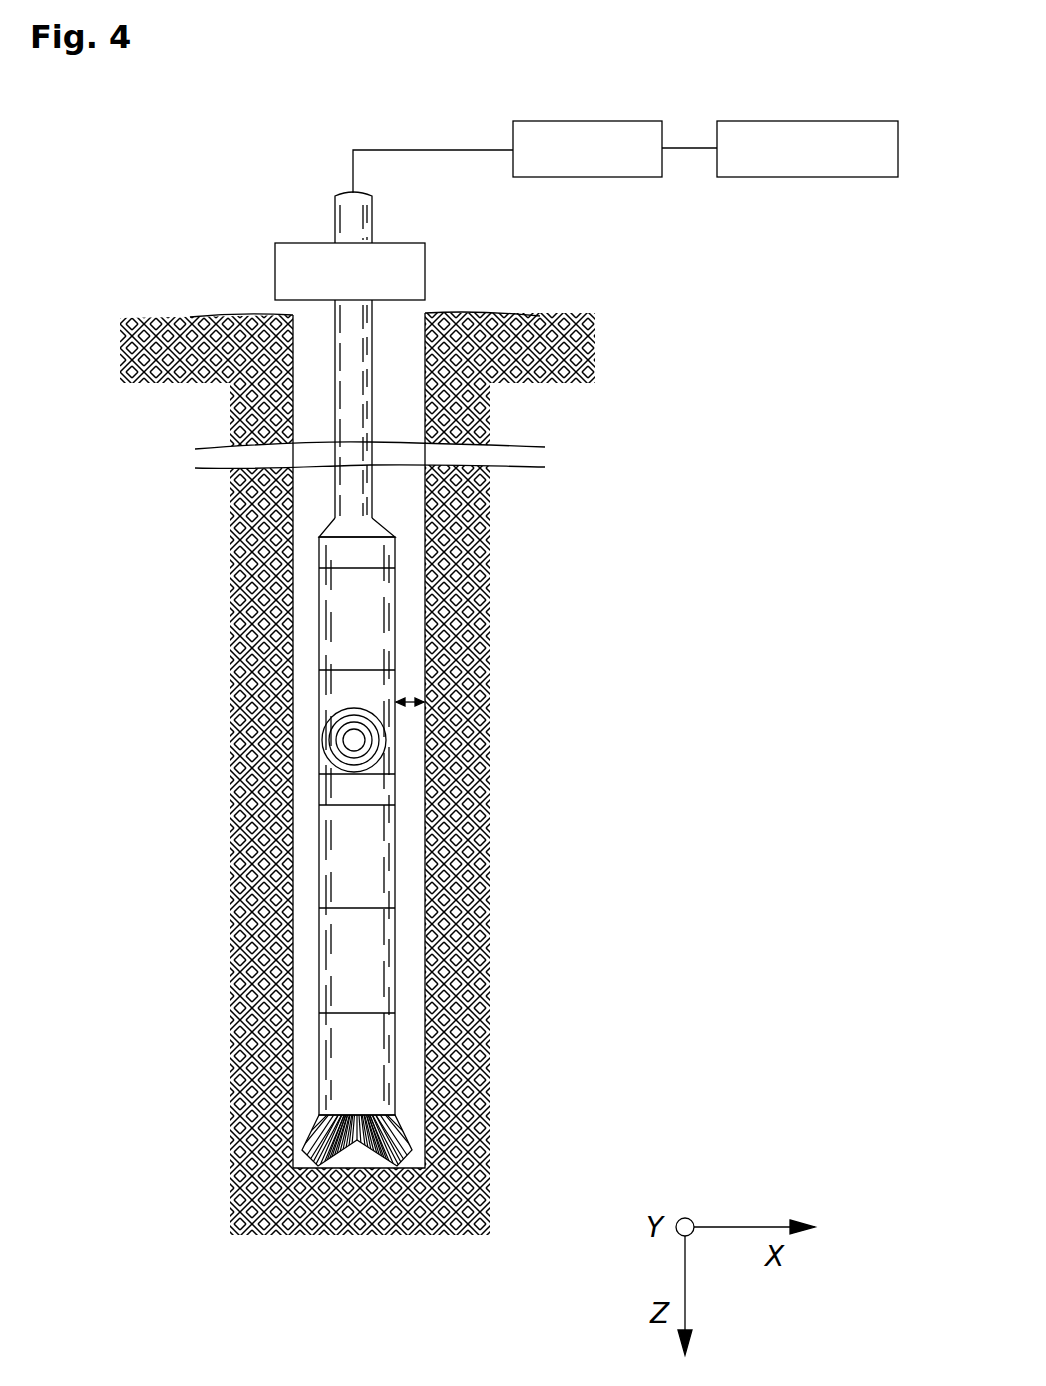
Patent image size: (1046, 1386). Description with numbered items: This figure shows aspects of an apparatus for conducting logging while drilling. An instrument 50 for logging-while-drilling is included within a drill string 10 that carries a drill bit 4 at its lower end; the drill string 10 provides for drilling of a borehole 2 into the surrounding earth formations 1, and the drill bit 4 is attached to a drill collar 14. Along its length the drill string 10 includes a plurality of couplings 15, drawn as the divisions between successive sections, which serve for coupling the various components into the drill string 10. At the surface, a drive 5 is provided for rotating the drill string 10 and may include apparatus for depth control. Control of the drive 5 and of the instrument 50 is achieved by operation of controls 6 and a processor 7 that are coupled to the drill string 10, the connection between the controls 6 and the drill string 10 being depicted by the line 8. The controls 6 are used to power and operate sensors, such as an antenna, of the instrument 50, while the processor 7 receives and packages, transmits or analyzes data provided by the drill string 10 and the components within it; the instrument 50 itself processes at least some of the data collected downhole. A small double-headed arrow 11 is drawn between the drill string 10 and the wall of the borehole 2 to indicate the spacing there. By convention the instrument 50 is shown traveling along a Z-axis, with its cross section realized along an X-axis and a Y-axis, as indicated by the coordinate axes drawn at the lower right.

The earth formations 1 is at (240, 418).
The borehole 2 is at (307, 630).
The drill bit 4 is at (403, 1132).
The drive 5 is at (285, 243).
The controls 6 is at (552, 121).
The processor 7 is at (738, 121).
The communication line 8 is at (407, 148).
The drill string 10 is at (357, 422).
The standoff gap 11 is at (410, 700).
The drill collar 14 is at (358, 858).
The couplings 15 is at (395, 568).
The instrument 50 is at (354, 740).